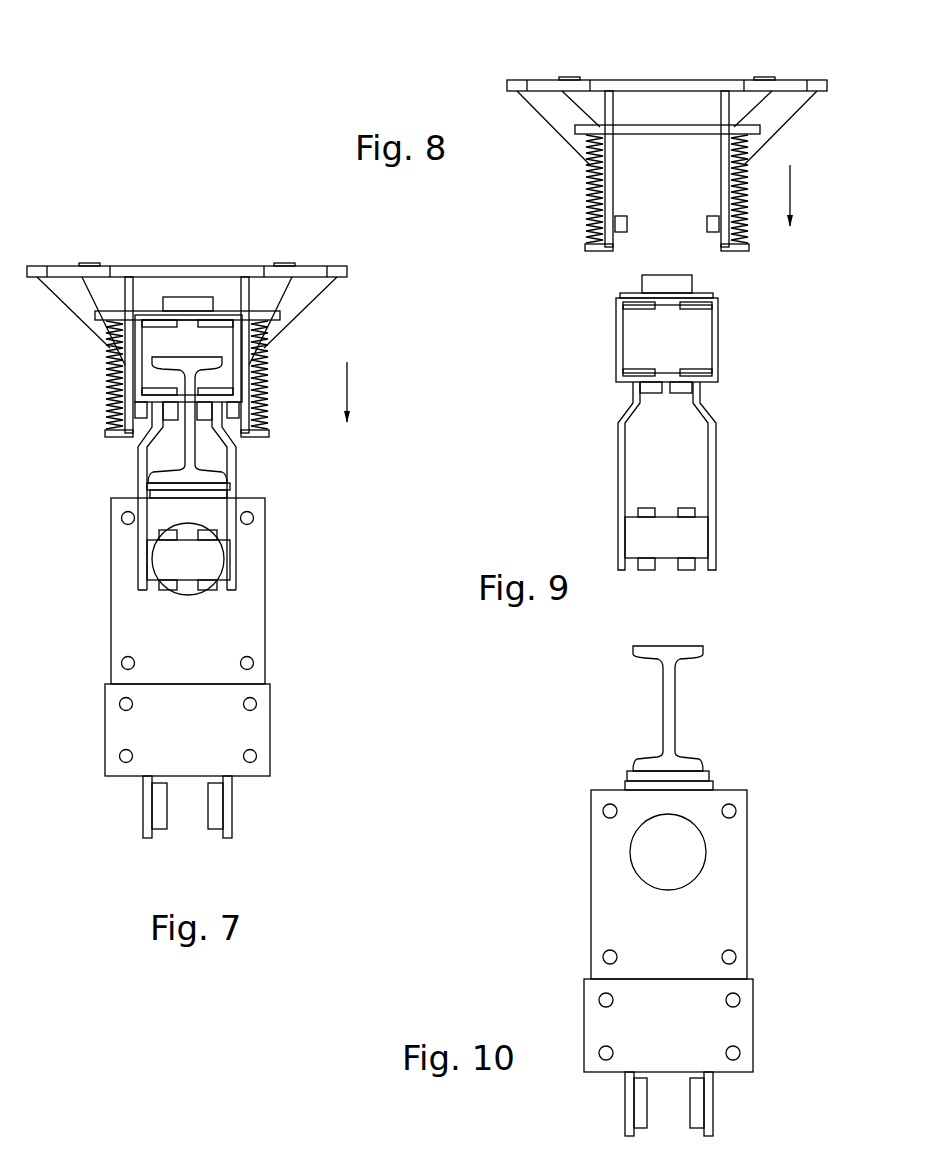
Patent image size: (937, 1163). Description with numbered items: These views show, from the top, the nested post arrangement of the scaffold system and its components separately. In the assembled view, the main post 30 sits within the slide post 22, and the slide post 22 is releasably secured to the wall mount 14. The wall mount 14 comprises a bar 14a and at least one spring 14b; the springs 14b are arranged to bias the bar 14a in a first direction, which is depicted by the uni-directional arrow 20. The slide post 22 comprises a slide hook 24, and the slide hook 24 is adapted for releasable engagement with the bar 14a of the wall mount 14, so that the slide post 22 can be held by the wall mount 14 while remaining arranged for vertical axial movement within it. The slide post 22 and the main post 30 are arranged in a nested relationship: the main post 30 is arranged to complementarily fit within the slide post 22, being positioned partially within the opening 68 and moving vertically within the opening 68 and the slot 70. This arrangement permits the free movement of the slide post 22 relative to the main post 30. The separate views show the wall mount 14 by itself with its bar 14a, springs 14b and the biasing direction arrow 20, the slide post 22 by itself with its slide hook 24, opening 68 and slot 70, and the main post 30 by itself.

In FIG. 7, the wall mount 14 is at (323, 303).
In FIG. 8, the wall mount 14 is at (677, 164).
In FIG. 7, the bar 14a is at (115, 311).
In FIG. 8, the bar 14a is at (667, 73).
In FIG. 7, the spring 14b is at (110, 401).
In FIG. 8, the spring 14b is at (667, 225).
In FIG. 7, the uni-directional arrow 20 is at (348, 387).
In FIG. 8, the uni-directional arrow 20 is at (819, 209).
In FIG. 7, the slide post 22 is at (123, 455).
In FIG. 9, the slide post 22 is at (594, 425).
In FIG. 7, the slide hook 24 is at (189, 302).
In FIG. 9, the slide hook 24 is at (650, 283).
In FIG. 7, the main post 30 is at (90, 603).
In FIG. 10, the main post 30 is at (736, 748).
In FIG. 7, the opening 68 is at (150, 344).
In FIG. 9, the opening 68 is at (638, 338).
In FIG. 7, the slot 70 is at (197, 422).
In FIG. 9, the slot 70 is at (667, 393).